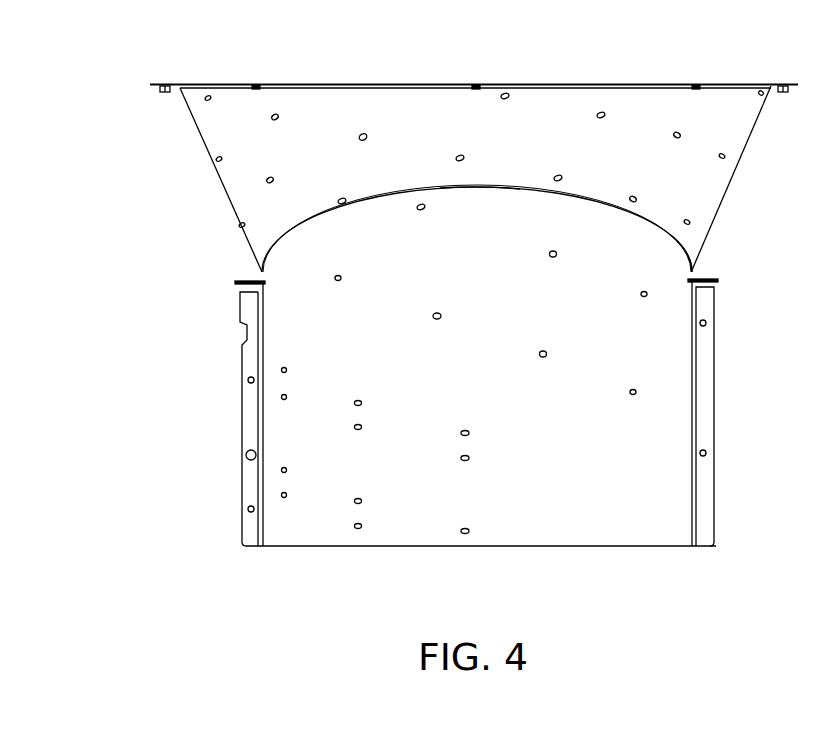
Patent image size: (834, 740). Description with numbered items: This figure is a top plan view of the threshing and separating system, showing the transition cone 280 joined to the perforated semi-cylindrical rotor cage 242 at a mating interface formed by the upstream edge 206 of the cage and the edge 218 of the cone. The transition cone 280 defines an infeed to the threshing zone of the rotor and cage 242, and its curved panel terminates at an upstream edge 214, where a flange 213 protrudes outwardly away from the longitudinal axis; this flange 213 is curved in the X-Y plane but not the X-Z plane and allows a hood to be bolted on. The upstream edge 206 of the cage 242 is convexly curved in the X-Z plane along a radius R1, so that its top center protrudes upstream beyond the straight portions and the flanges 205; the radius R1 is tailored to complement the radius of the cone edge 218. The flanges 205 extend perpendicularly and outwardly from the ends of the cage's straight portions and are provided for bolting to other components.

The upstream edge 214 is at (716, 83).
The flange 213 is at (793, 88).
The transition cone 280 is at (710, 176).
The upstream edge 206 is at (541, 228).
The edge 218 is at (680, 242).
The rotor cage 242 is at (658, 269).
The radius of upstream edge R1 is at (489, 194).
The flange 205 is at (250, 415).